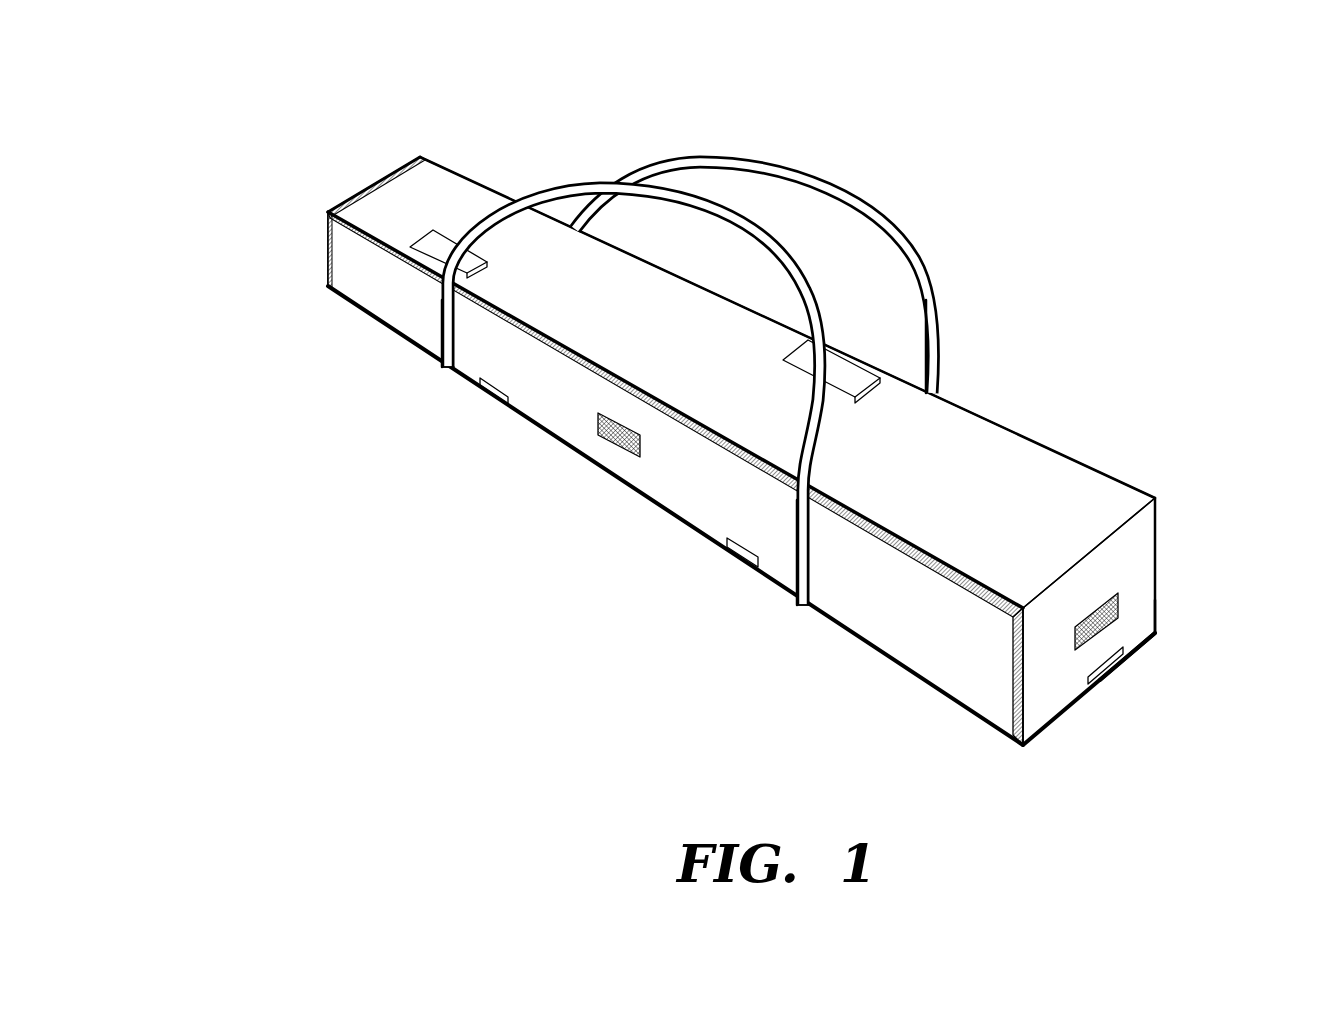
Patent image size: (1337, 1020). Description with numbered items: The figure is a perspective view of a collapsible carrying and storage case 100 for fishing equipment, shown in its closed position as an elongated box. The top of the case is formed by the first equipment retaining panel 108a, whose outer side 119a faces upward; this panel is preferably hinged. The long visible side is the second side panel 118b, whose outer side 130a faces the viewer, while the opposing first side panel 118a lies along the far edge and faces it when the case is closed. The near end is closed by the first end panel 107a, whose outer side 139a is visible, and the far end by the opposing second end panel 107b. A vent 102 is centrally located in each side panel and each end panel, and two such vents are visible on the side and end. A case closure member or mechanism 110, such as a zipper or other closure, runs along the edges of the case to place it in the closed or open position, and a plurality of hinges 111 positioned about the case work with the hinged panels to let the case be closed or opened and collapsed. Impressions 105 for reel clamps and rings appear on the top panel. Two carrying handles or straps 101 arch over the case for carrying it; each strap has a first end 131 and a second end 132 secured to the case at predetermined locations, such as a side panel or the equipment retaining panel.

The collapsible case 100 is at (752, 425).
The carrying handle or strap 101 is at (582, 183).
The vent 102 is at (621, 443).
The impression for reel clamps and rings 105 is at (400, 250).
The first end panel 107a is at (1146, 625).
The second end panel 107b is at (406, 155).
The first equipment retaining panel 108a is at (1115, 495).
The case closure member or mechanism 110 is at (348, 197).
The hinge 111 is at (497, 180).
The first side panel 118a is at (443, 163).
The second side panel 118b is at (897, 640).
The outer side of first equipment retaining panel 119a is at (1072, 537).
The outer side of second side panel 130a is at (843, 615).
The first end of carrying handle 131 is at (798, 575).
The second end of carrying handle 132 is at (447, 352).
The outer side of first end panel 139a is at (1150, 572).